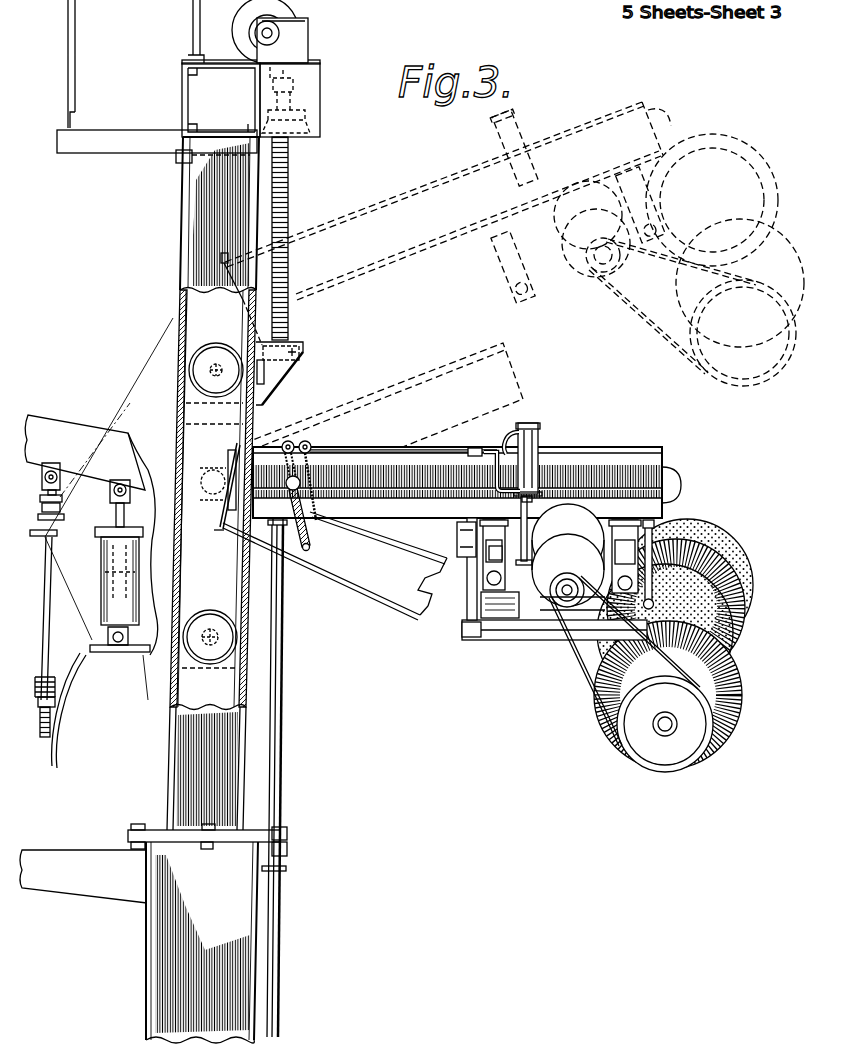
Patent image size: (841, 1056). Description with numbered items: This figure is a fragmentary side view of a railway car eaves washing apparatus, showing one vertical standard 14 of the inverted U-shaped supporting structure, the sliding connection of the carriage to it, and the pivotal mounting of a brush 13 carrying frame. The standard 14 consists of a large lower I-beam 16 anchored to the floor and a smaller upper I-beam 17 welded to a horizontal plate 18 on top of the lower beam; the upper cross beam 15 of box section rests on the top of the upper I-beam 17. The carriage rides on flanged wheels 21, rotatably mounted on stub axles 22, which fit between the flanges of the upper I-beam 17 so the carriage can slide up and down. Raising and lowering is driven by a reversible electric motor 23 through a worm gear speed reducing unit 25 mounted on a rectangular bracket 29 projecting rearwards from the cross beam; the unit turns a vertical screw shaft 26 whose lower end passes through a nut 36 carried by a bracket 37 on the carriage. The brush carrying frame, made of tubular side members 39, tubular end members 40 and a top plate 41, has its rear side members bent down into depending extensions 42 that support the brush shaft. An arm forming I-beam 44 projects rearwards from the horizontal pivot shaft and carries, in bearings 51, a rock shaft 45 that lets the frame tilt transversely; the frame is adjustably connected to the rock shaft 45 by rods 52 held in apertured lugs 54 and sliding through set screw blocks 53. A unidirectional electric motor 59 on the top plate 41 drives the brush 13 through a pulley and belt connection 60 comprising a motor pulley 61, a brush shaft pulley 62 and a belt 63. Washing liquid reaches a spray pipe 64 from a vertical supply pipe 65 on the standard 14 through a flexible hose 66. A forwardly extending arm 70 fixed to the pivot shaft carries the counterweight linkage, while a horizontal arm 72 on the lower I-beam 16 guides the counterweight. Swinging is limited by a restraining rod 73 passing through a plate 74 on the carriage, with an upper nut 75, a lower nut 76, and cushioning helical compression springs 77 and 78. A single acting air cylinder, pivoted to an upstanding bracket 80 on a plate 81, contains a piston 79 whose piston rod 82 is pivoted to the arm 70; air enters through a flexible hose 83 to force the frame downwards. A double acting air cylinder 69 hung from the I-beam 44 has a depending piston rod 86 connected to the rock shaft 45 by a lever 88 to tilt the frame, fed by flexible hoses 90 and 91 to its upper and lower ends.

The brush 13 is at (744, 690).
The vertical standard 14 is at (152, 945).
The upper cross beam 15 is at (183, 86).
The lower I-beam 16 is at (160, 982).
The upper I-beam 17 is at (212, 205).
The horizontal plate 18 is at (255, 836).
The flanged wheel 21 is at (190, 360).
The stub axle 22 is at (238, 638).
The reversible electric motor 23 is at (250, 4).
The speed reducing unit 25 is at (312, 28).
The screw shaft 26 is at (292, 182).
The rectangular bracket 29 is at (318, 101).
The nut 36 is at (308, 350).
The bracket 37 is at (288, 383).
The tubular side member 39 is at (520, 640).
The tubular end member 40 is at (468, 598).
The top plate 41 is at (488, 608).
The depending extension 42 is at (700, 652).
The arm forming I-beam 44 is at (420, 512).
The rock shaft 45 is at (418, 483).
The bearing 51 is at (457, 542).
The rod 52 is at (505, 560).
The block 53 is at (618, 545).
The apertured lug 54 is at (430, 590).
The electric motor 59 is at (568, 555).
The pulley and belt connection 60 is at (594, 680).
The pulley 61 is at (562, 607).
The pulley 62 is at (645, 762).
The belt 63 is at (598, 713).
The spray pipe 64 is at (656, 583).
The supply pipe 65 is at (285, 738).
The flexible hose 66 is at (312, 547).
The double acting air cylinder 69 is at (540, 452).
The forwardly extending arm 70 is at (62, 425).
The horizontally extending arm 72 is at (52, 880).
The restraining rod 73 is at (46, 610).
The horizontally extending plate 74 is at (38, 537).
The nut 75 is at (62, 481).
The nut 76 is at (40, 733).
The helical compression spring 77 is at (62, 519).
The helical compression spring 78 is at (57, 684).
The piston 79 is at (116, 600).
The upstanding bracket 80 is at (118, 655).
The horizontally extending plate 81 is at (147, 665).
The piston rod 82 is at (126, 508).
The flexible hose 83 is at (62, 772).
The piston rod 86 is at (520, 512).
The lever 88 is at (490, 556).
The flexible hose 90 is at (512, 441).
The flexible hose 91 is at (495, 478).